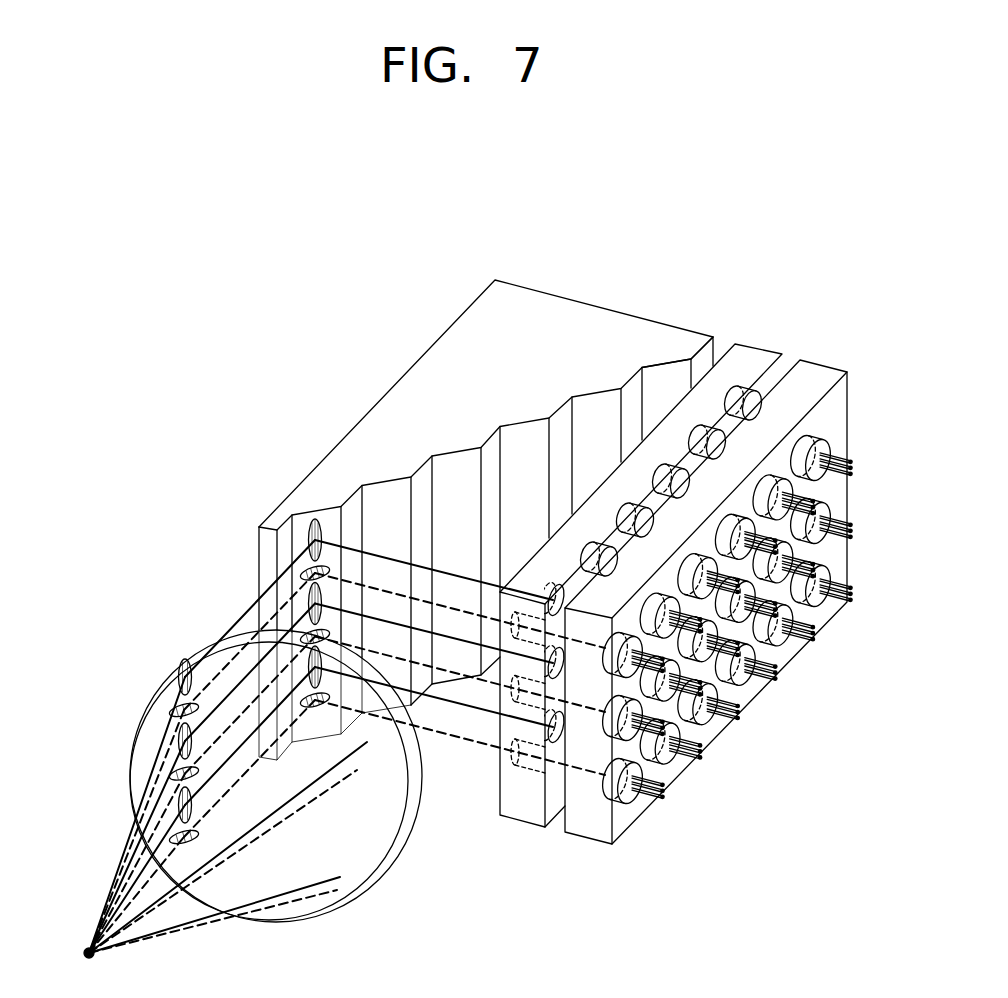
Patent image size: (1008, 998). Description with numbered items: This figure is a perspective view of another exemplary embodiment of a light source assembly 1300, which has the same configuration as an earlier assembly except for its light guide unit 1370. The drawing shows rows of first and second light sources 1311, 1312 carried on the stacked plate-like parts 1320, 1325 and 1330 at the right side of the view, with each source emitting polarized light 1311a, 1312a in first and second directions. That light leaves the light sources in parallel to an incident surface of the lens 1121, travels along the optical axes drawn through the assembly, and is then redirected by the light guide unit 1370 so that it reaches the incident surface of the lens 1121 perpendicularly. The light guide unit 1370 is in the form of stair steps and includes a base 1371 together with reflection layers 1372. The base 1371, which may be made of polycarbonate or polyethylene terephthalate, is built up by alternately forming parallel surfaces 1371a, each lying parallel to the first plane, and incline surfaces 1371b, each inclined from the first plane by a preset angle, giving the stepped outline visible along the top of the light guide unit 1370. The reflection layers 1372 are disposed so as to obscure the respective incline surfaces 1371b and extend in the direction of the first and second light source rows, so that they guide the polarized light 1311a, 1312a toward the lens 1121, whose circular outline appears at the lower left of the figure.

The light source assembly 1300 is at (226, 325).
The light guide unit 1370 is at (368, 361).
The base 1371 is at (355, 457).
The parallel surfaces 1371a is at (700, 347).
The incline surfaces 1371b is at (662, 358).
The reflection layers 1372 is at (330, 523).
The holder 1320 is at (753, 358).
The holder front portion 1325 is at (498, 757).
The substrate 1330 is at (820, 375).
The first light source 1311 is at (563, 755).
The second light source 1312 is at (633, 803).
The polarized light in first direction 1311a is at (178, 670).
The polarized light in second direction 1312a is at (173, 708).
The lens 1121 is at (365, 870).